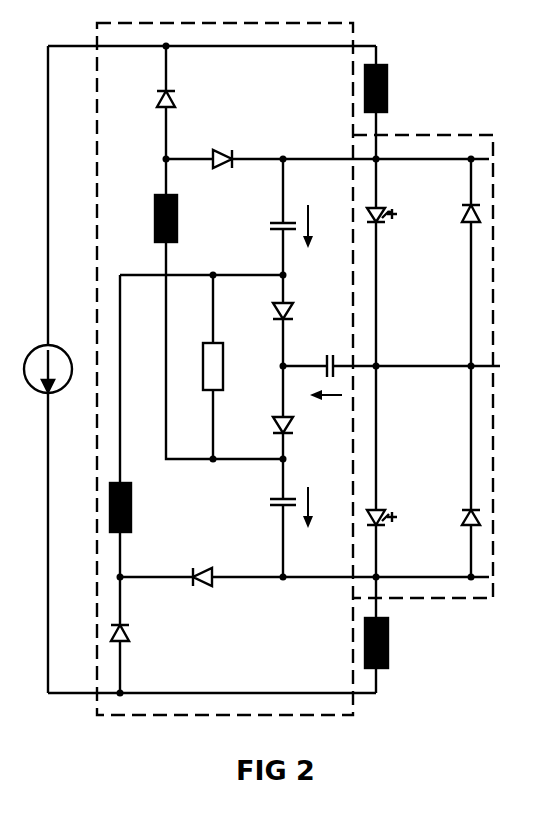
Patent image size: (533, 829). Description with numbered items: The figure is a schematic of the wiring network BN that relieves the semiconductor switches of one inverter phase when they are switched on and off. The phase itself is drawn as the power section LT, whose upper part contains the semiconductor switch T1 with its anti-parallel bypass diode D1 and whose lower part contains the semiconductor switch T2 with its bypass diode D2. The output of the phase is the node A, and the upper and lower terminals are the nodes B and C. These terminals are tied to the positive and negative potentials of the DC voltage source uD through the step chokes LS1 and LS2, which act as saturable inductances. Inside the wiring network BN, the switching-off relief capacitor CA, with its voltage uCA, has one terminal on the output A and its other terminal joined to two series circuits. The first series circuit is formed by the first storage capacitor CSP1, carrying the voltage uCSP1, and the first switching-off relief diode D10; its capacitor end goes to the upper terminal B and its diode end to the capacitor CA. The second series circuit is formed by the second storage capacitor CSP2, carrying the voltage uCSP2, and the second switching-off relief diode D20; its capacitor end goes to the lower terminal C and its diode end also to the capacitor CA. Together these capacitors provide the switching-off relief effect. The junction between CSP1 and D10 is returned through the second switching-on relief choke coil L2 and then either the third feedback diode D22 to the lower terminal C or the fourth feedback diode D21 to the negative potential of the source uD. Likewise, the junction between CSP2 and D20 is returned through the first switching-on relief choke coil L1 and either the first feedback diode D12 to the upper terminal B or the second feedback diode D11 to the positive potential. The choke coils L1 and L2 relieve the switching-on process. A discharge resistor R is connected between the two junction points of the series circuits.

The wiring network BN is at (348, 28).
The power section LT is at (443, 142).
The DC voltage source uD is at (52, 345).
The second feedback diode D11 is at (172, 90).
The first feedback diode D12 is at (236, 152).
The first switching-on relief choke coil L1 is at (177, 218).
The first storage capacitor CSP1 is at (268, 226).
The voltage across first storage capacitor uCSP1 is at (322, 212).
The first switching-off relief diode D10 is at (285, 302).
The switching-off relief capacitor CA is at (325, 353).
The voltage across switching-off relief capacitor uCA is at (334, 397).
The discharge resistor R is at (223, 366).
The second switching-off relief diode D20 is at (272, 425).
The second storage capacitor CSP2 is at (268, 502).
The voltage across second storage capacitor uCSP2 is at (322, 492).
The second switching-on relief choke coil L2 is at (131, 507).
The third feedback diode D22 is at (190, 570).
The fourth feedback diode D21 is at (126, 624).
The step choke LS1 is at (389, 59).
The step choke LS2 is at (390, 614).
The semiconductor switch T1 is at (378, 222).
The semiconductor switch T2 is at (383, 510).
The anti-parallel bypass diode D1 is at (463, 200).
The bypass diode D2 is at (463, 507).
The output A is at (494, 366).
The upper terminal B is at (378, 162).
The lower terminal C is at (378, 575).